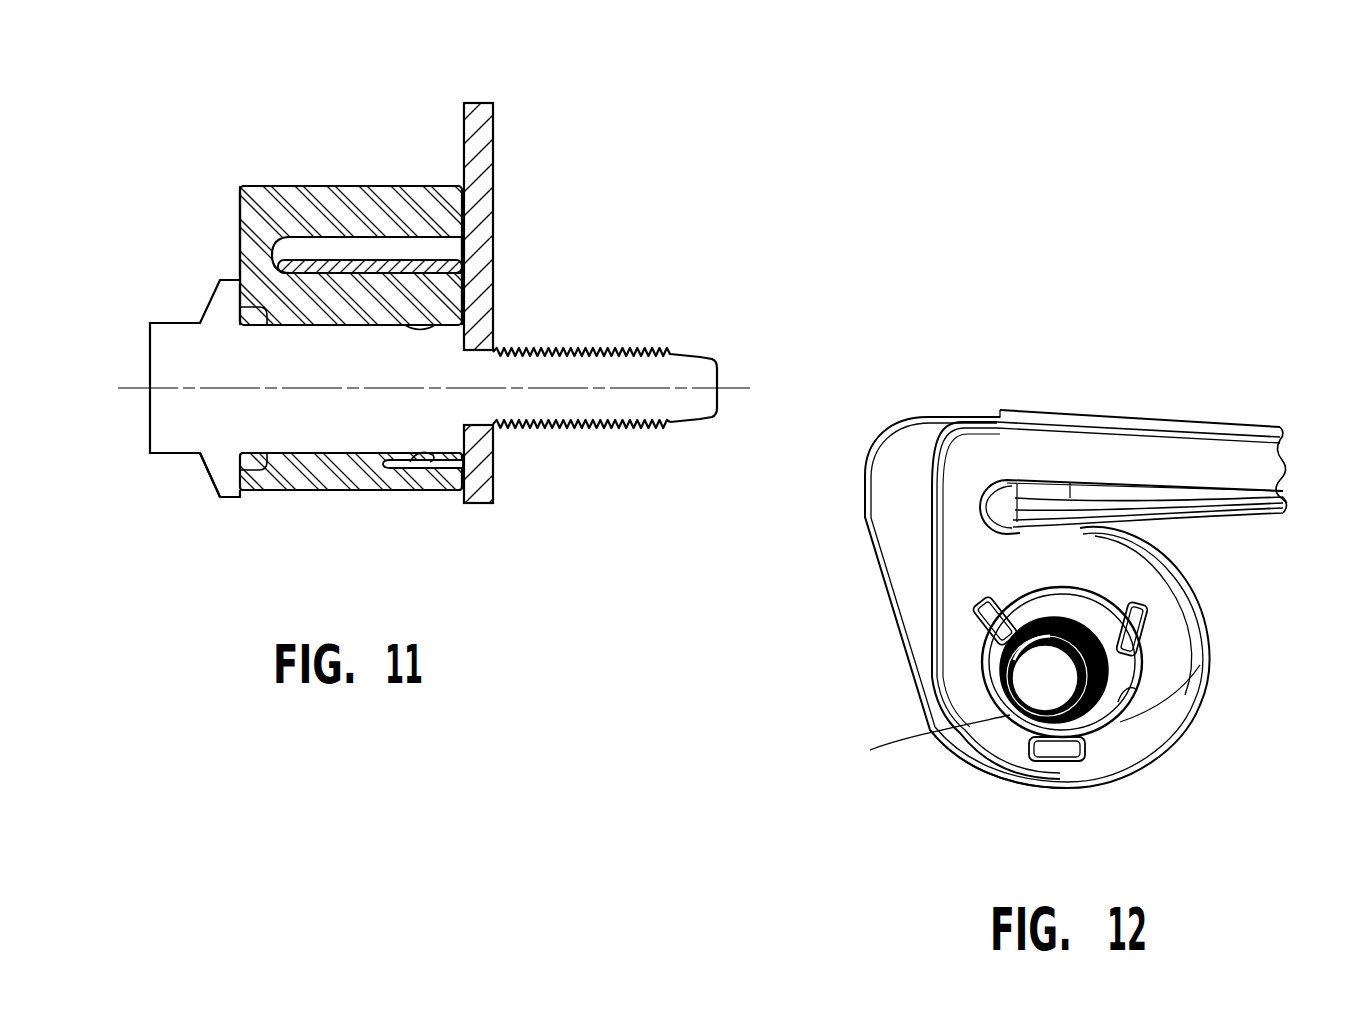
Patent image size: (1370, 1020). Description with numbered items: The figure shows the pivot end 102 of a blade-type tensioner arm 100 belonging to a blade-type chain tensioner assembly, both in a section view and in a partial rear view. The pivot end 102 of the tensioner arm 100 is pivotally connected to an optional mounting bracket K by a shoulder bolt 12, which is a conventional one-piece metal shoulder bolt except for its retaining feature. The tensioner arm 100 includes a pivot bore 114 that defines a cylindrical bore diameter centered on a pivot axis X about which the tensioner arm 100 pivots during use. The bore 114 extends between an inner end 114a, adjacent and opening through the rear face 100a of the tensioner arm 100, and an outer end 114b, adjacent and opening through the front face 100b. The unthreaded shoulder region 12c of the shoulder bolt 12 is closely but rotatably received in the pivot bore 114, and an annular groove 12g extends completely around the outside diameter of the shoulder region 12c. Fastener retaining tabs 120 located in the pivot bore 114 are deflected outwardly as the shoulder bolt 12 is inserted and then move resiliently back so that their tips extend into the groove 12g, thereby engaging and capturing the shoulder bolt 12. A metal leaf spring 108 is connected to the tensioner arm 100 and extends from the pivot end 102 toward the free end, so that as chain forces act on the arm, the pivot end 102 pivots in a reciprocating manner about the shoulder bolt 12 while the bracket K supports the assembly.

In FIG. 11, the shoulder bolt 12 is at (175, 437).
In FIG. 12, the shoulder bolt 12 is at (1042, 683).
In FIG. 11, the shoulder region 12c is at (313, 453).
In FIG. 11, the annular groove 12g is at (418, 330).
In FIG. 11, the blade-type tensioner arm 100 is at (315, 197).
In FIG. 12, the blade-type tensioner arm 100 is at (1217, 457).
In FIG. 12, the rear face 100a is at (1008, 747).
In FIG. 11, the front face 100b is at (237, 213).
In FIG. 11, the pivot end 102 is at (207, 163).
In FIG. 12, the pivot end 102 is at (820, 570).
In FIG. 11, the leaf spring 108 is at (373, 260).
In FIG. 12, the leaf spring 108 is at (1217, 517).
In FIG. 11, the pivot bore 114 is at (330, 462).
In FIG. 12, the pivot bore 114 is at (1120, 693).
In FIG. 11, the inner end 114a is at (472, 307).
In FIG. 11, the outer end 114b is at (236, 316).
In FIG. 11, the fastener retaining tabs 120 is at (430, 453).
In FIG. 12, the fastener retaining tabs 120 is at (980, 607).
In FIG. 11, the mounting bracket K is at (485, 176).
In FIG. 11, the pivot axis X is at (743, 348).